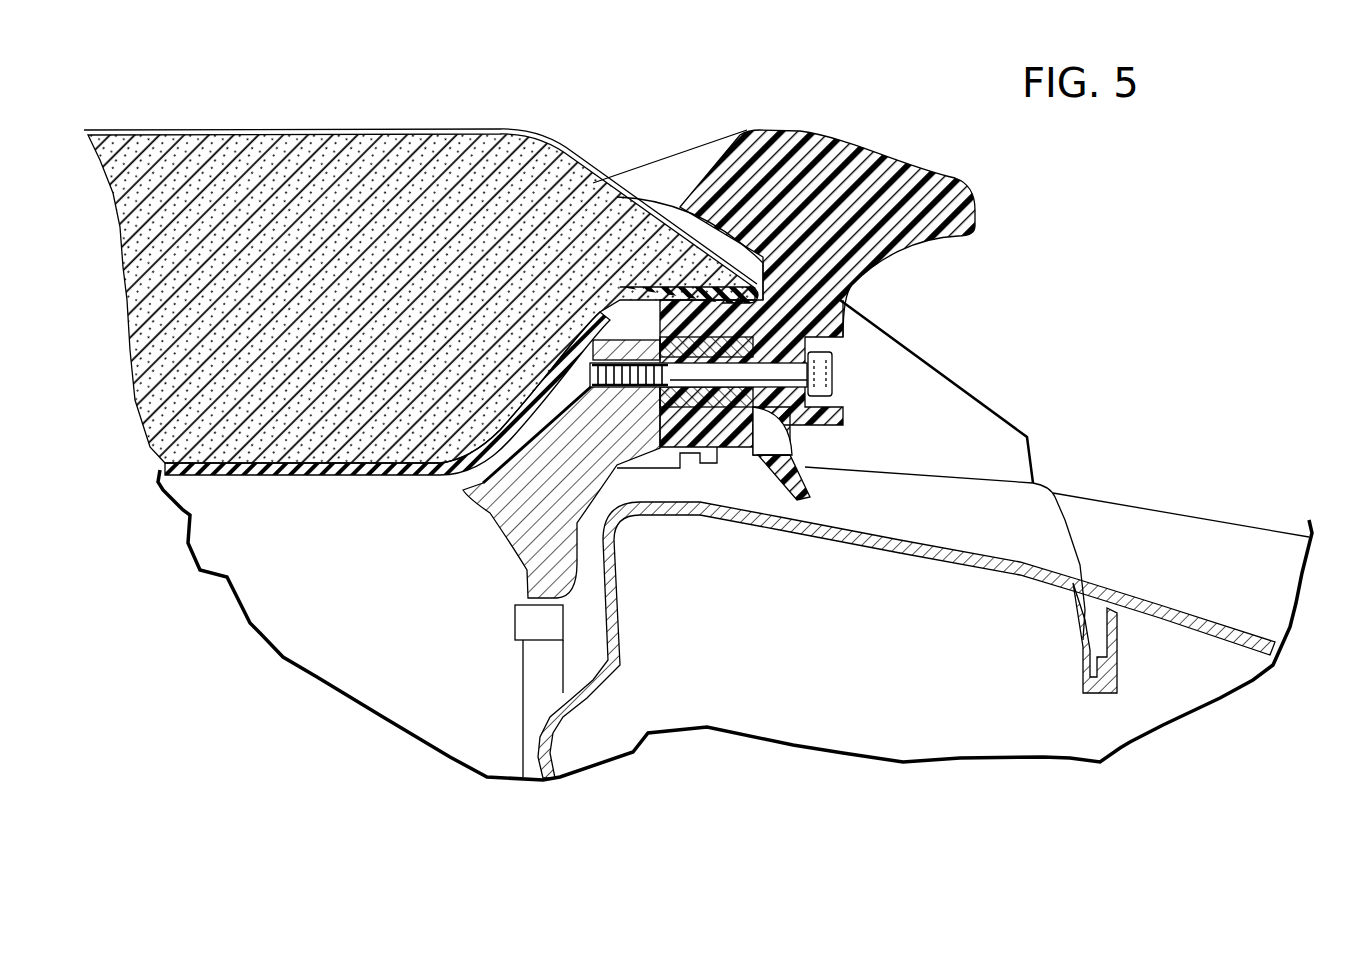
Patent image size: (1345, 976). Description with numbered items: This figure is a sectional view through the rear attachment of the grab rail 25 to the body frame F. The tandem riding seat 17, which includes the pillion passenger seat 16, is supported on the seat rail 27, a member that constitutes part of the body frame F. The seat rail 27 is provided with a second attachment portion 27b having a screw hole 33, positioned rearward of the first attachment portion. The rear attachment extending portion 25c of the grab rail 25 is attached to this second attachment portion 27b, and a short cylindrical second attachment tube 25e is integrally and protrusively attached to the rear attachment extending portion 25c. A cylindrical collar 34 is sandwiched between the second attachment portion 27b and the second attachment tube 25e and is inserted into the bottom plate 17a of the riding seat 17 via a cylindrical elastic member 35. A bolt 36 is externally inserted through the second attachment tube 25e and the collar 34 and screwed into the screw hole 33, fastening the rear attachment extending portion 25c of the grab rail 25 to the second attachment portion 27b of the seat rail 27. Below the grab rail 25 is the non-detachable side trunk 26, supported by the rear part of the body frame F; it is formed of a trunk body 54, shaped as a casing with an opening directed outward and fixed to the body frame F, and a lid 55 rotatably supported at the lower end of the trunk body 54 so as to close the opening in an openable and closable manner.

The pillion passenger seat 16 is at (307, 133).
The riding seat 17 is at (366, 128).
The bottom plate 17a is at (323, 467).
The grab rail 25 is at (848, 142).
The rear attachment extending portion 25c is at (840, 325).
The second attachment tube 25e is at (790, 440).
The side trunk 26 is at (1135, 496).
The seat rail 27 is at (533, 570).
The second attachment portion 27b is at (627, 340).
The screw hole 33 is at (632, 370).
The collar 34 is at (695, 466).
The elastic member 35 is at (720, 465).
The bolt 36 is at (840, 377).
The trunk body 54 is at (977, 490).
The lid 55 is at (1205, 522).
The body frame F is at (493, 518).